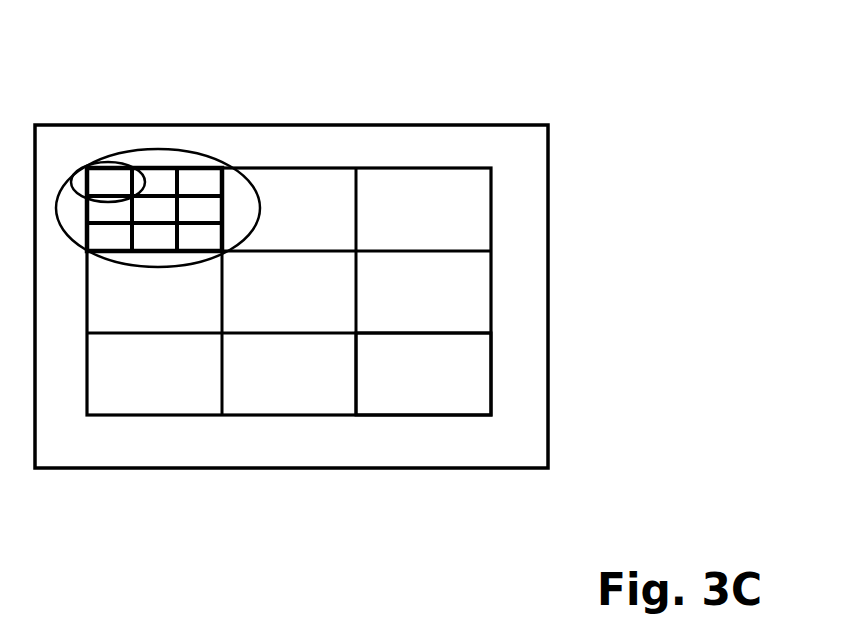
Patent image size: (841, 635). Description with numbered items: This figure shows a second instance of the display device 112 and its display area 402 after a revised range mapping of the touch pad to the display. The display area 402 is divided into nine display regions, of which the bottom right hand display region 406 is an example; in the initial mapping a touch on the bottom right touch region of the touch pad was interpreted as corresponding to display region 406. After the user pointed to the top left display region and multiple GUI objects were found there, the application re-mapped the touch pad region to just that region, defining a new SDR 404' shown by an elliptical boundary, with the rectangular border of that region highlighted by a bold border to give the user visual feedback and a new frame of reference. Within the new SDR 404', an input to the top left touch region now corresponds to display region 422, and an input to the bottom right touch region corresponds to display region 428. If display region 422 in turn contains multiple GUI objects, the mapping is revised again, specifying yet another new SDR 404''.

The display device 112 is at (485, 123).
The display area 402 is at (530, 264).
The display region 406 is at (417, 375).
The SDR 404'' is at (161, 132).
The SDR 404' is at (190, 160).
The display region 422 is at (110, 182).
The display region 428 is at (195, 238).